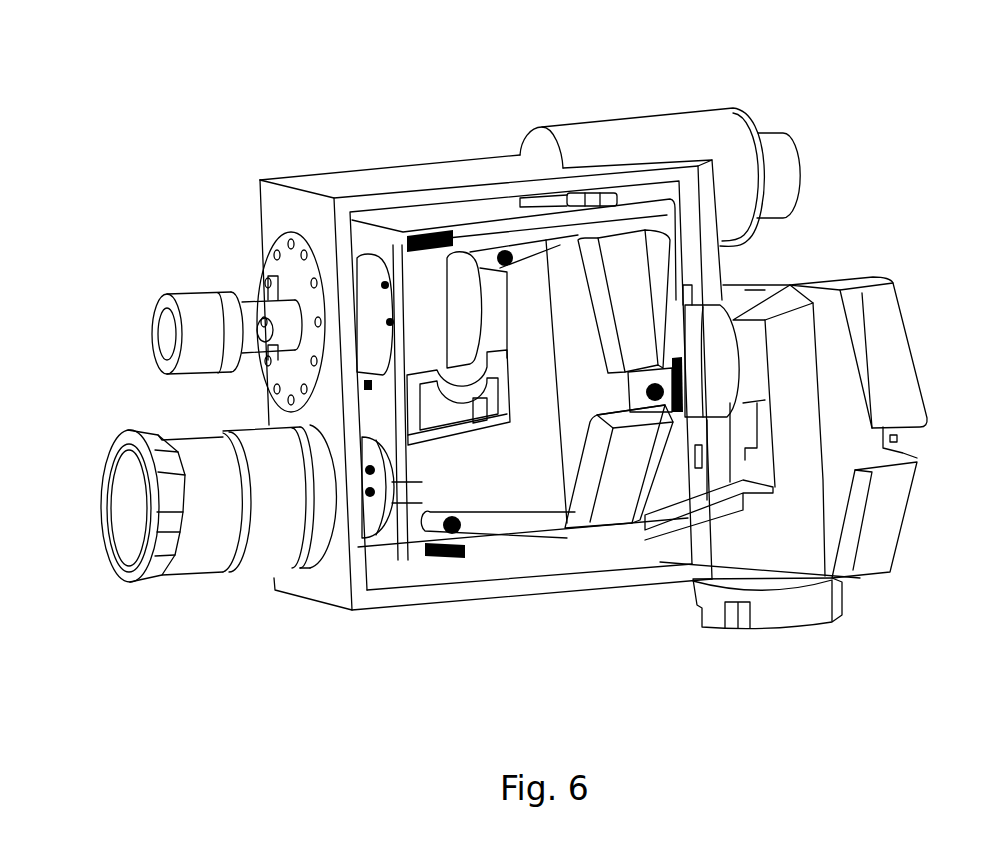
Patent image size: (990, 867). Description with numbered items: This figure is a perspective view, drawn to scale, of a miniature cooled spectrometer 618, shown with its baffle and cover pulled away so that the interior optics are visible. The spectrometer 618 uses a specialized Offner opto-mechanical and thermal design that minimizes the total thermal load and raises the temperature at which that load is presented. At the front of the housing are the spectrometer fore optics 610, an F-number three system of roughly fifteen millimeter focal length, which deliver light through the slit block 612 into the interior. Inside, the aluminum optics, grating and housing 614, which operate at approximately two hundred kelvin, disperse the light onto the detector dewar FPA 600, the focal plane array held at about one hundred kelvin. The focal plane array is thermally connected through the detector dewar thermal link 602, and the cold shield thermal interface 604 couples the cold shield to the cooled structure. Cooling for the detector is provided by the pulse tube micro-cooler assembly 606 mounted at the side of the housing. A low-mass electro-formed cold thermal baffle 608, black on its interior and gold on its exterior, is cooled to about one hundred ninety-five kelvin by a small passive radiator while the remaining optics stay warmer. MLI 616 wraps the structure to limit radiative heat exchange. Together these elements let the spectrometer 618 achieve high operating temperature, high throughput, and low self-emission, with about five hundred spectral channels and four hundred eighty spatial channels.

The detector dewar FPA 600 is at (308, 332).
The detector dewar thermal link 602 is at (145, 321).
The cold shield thermal interface 604 is at (784, 181).
The pulse tube micro-cooler assembly 606 is at (814, 607).
The cold thermal baffle 608 is at (805, 527).
The spectrometer fore optics 610 is at (241, 480).
The slit block 612 is at (390, 519).
The aluminum optics/grating/housing 614 is at (467, 225).
The MLI 616 is at (736, 527).
The spectrometer 618 is at (256, 92).